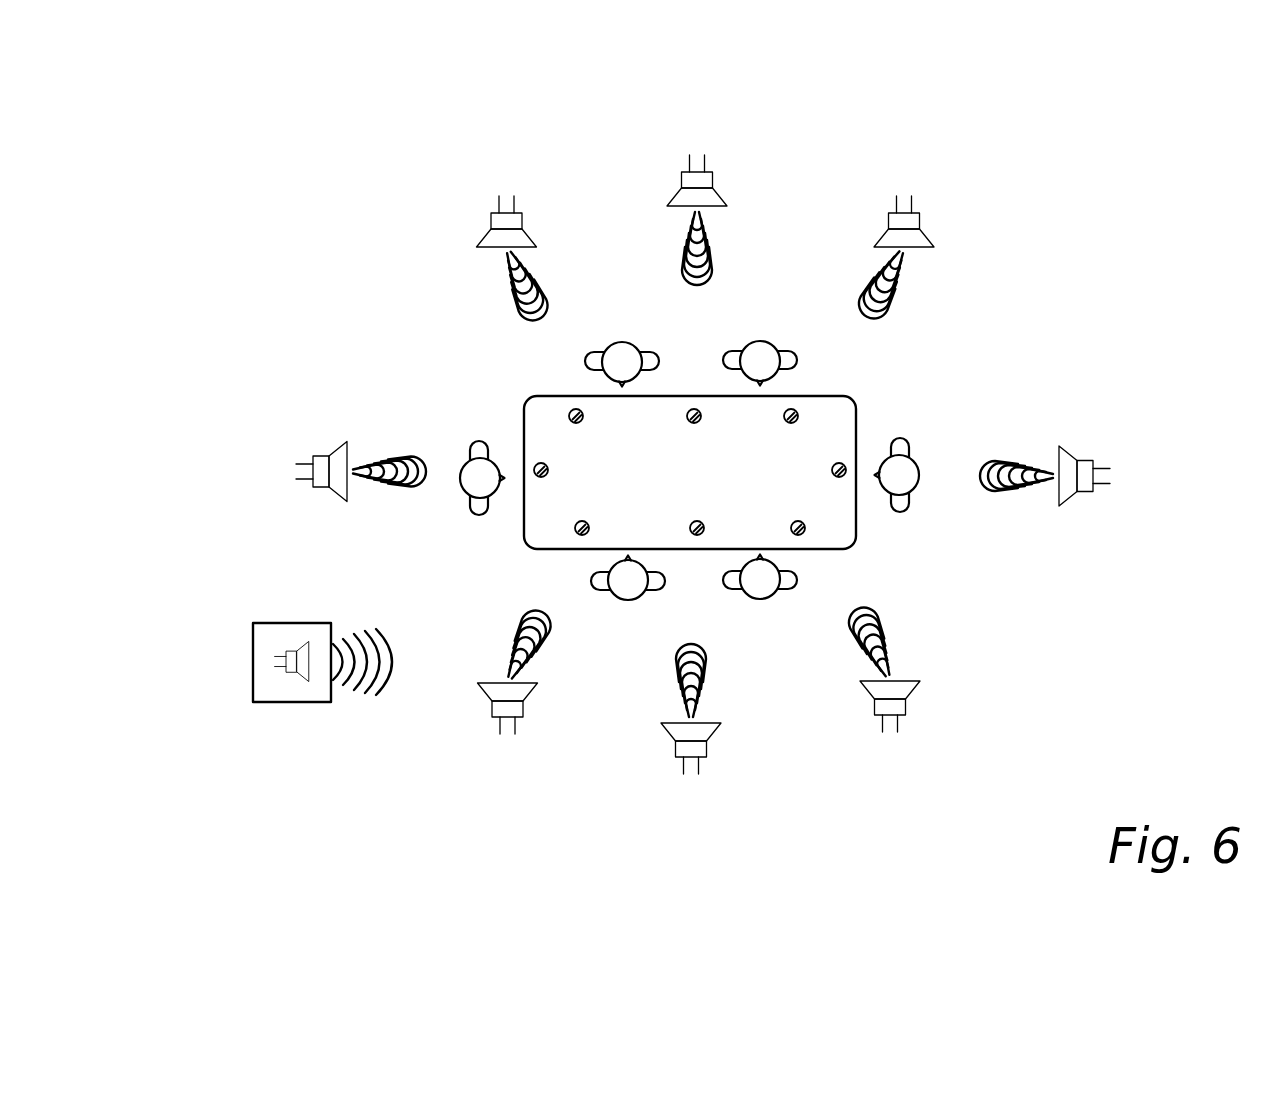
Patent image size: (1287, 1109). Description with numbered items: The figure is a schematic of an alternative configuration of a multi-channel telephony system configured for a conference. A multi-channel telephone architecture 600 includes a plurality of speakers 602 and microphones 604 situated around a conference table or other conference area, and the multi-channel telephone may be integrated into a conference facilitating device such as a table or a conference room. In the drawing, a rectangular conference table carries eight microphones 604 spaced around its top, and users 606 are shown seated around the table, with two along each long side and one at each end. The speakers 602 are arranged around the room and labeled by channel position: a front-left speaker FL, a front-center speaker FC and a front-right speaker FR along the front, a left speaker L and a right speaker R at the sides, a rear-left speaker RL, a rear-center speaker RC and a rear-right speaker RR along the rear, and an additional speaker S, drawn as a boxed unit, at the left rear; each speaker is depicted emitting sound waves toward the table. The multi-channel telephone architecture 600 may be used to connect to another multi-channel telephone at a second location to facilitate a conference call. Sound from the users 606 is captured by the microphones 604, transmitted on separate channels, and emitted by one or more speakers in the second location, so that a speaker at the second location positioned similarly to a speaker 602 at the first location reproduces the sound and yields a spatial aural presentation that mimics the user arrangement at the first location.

The multi-channel telephone architecture 600 is at (302, 182).
The speakers 602 is at (898, 163).
The microphones 604 is at (565, 535).
The users 606 is at (548, 362).
The front-left loudspeaker FL is at (499, 198).
The front-center loudspeaker FC is at (689, 155).
The front-right loudspeaker FR is at (912, 198).
The left loudspeaker L is at (297, 463).
The right loudspeaker R is at (1110, 468).
The subwoofer / sound source S is at (280, 623).
The rear-left loudspeaker RL is at (500, 734).
The rear-center loudspeaker RC is at (698, 774).
The rear-right loudspeaker RR is at (898, 732).